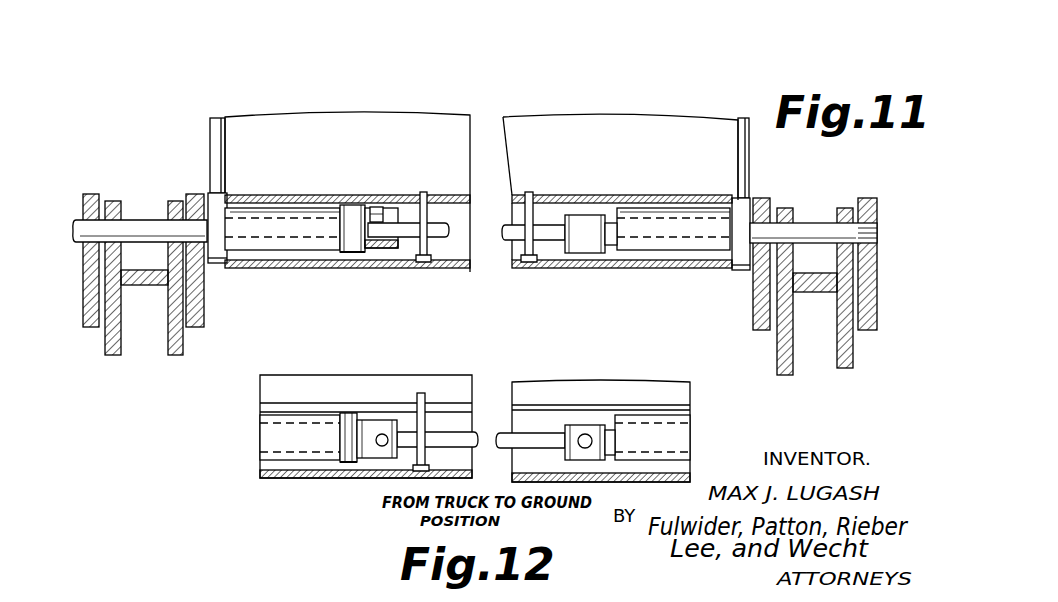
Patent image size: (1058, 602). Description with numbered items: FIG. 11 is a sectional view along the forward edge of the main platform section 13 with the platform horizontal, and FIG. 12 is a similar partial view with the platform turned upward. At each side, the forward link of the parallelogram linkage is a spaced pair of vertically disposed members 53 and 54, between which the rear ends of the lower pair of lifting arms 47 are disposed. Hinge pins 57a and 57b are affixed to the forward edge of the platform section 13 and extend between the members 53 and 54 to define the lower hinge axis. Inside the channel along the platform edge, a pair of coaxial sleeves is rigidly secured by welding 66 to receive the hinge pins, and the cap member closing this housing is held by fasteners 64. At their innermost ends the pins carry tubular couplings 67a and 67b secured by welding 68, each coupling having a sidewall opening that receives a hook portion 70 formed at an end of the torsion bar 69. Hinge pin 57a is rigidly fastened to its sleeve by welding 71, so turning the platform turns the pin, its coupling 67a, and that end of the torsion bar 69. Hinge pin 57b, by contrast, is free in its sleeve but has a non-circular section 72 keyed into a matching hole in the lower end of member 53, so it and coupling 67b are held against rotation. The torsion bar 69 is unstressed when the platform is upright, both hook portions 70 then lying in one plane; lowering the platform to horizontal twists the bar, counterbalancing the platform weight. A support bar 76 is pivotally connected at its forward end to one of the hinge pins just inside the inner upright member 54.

In FIG. 11, the main platform section 13 is at (315, 118).
In FIG. 11, the lower pair of lifting arms 47 is at (168, 353).
In FIG. 11, the vertically disposed member 53 is at (83, 310).
In FIG. 11, the vertically disposed member 54 is at (203, 320).
In FIG. 11, the hinge pin 57a is at (137, 225).
In FIG. 11, the hinge pin 57b is at (800, 222).
In FIG. 11, the fasteners 64 is at (427, 193).
In FIG. 12, the fasteners 64 is at (422, 395).
In FIG. 11, the welding 66 is at (250, 207).
In FIG. 11, the tubular coupling 67a is at (360, 222).
In FIG. 11, the tubular coupling 67b is at (592, 255).
In FIG. 11, the welding 68 is at (353, 253).
In FIG. 12, the welding 68 is at (346, 415).
In FIG. 11, the torsion bar 69 is at (447, 240).
In FIG. 12, the torsion bar 69 is at (525, 440).
In FIG. 11, the hook portion 70 is at (380, 208).
In FIG. 12, the hook portion 70 is at (380, 433).
In FIG. 11, the welding 71 is at (348, 253).
In FIG. 12, the welding 71 is at (345, 463).
In FIG. 11, the non-circular section 72 is at (877, 237).
In FIG. 11, the support bar 76 is at (210, 133).